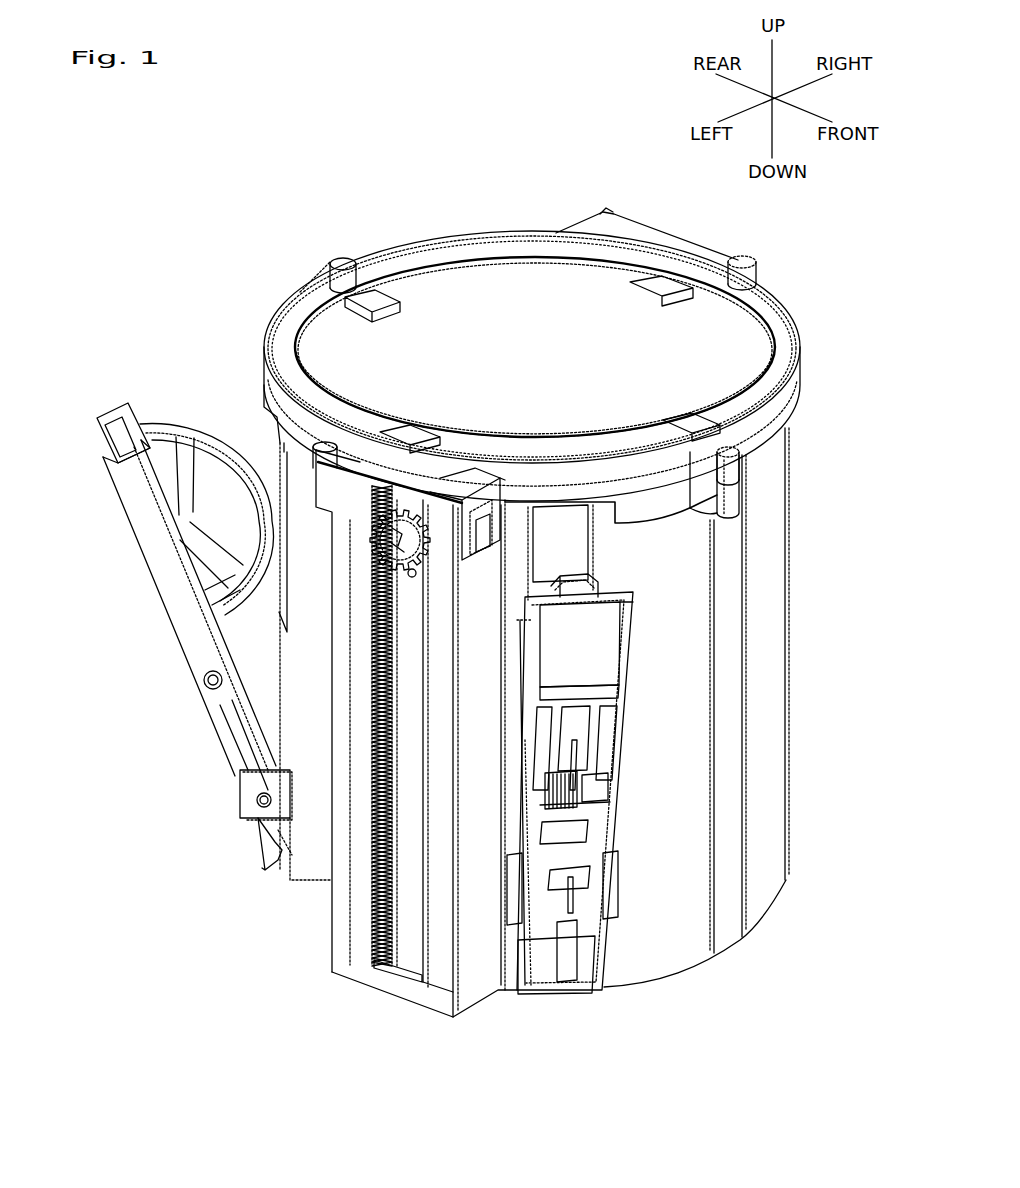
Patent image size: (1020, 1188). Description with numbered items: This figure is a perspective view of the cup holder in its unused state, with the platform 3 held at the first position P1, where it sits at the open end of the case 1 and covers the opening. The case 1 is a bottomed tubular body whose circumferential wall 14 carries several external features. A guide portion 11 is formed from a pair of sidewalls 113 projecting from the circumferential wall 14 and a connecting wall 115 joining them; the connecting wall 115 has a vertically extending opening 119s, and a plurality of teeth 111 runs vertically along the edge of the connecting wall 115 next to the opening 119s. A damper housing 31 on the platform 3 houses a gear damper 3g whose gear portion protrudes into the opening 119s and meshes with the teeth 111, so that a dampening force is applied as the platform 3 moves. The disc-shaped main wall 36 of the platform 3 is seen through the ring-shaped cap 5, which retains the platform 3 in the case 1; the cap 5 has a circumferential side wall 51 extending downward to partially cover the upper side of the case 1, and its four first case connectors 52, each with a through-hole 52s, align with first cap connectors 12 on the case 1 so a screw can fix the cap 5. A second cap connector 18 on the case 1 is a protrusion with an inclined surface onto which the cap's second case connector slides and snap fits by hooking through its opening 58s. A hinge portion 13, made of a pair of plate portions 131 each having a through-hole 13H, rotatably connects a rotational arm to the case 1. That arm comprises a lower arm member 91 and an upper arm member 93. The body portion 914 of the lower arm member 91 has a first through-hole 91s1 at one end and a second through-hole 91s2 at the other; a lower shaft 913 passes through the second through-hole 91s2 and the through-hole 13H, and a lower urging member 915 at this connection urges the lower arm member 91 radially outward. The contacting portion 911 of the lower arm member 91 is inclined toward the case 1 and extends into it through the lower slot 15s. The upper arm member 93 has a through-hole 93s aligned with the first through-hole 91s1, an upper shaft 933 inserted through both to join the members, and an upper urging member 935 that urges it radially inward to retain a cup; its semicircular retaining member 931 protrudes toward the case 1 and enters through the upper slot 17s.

The case 1 is at (527, 725).
The platform 3 is at (598, 366).
The main wall 36 is at (535, 347).
The gear damper 3g is at (432, 492).
The cap 5 is at (548, 353).
The first case connector 52 is at (348, 266).
The through-hole 52s is at (610, 350).
The guide portion 11 is at (355, 828).
The teeth 111 is at (340, 880).
The sidewalls 113 is at (497, 702).
The connecting wall 115 is at (347, 758).
The opening 119s is at (385, 882).
The first cap connector 12 is at (290, 470).
The hinge portion 13 is at (245, 820).
The plate portion 131 is at (213, 825).
The through-hole 13H is at (367, 859).
The circumferential wall 14 is at (681, 682).
The lower slot 15s is at (278, 843).
The upper slot 17s is at (573, 552).
The second cap connector 18 is at (545, 491).
The opening 58s is at (488, 540).
The damper housing 31 is at (380, 524).
The circumferential side wall 51 is at (663, 504).
The lower arm member 91 is at (320, 802).
The body portion 914 is at (232, 722).
The first through-hole 91s1 is at (208, 682).
The second through-hole 91s2 is at (262, 800).
The contacting portion 911 is at (457, 926).
The lower shaft 913 is at (367, 859).
The lower urging member 915 is at (578, 905).
The upper arm member 93 is at (167, 565).
The through-hole 93s is at (354, 738).
The retaining member 931 is at (172, 442).
The upper shaft 933 is at (354, 738).
The upper urging member 935 is at (580, 790).
The first position P1 is at (292, 262).